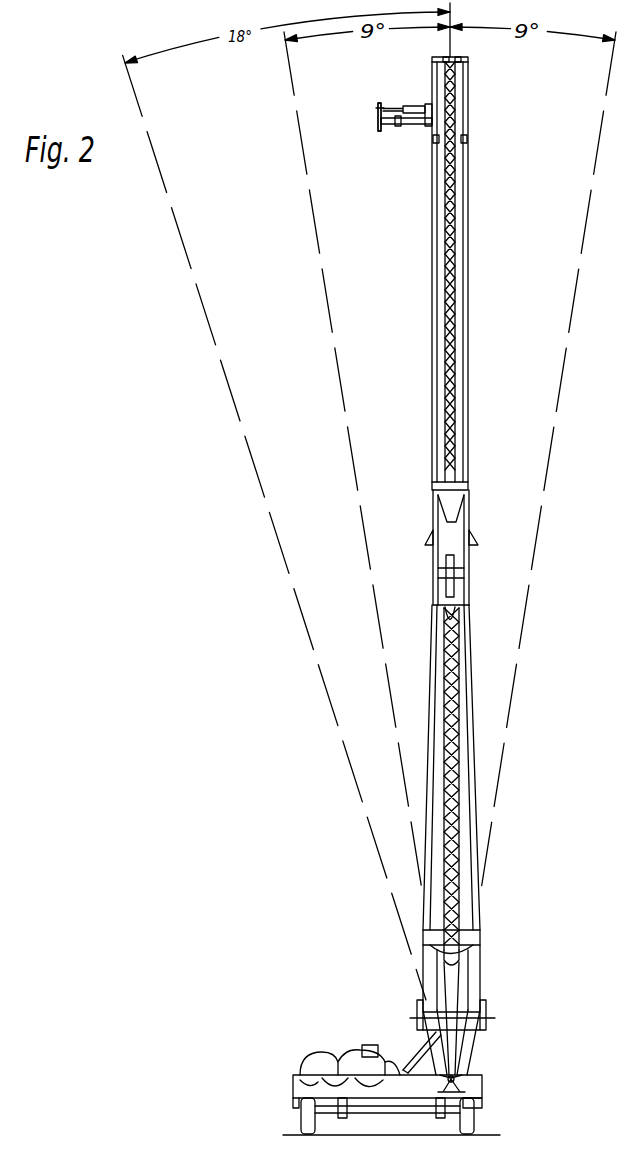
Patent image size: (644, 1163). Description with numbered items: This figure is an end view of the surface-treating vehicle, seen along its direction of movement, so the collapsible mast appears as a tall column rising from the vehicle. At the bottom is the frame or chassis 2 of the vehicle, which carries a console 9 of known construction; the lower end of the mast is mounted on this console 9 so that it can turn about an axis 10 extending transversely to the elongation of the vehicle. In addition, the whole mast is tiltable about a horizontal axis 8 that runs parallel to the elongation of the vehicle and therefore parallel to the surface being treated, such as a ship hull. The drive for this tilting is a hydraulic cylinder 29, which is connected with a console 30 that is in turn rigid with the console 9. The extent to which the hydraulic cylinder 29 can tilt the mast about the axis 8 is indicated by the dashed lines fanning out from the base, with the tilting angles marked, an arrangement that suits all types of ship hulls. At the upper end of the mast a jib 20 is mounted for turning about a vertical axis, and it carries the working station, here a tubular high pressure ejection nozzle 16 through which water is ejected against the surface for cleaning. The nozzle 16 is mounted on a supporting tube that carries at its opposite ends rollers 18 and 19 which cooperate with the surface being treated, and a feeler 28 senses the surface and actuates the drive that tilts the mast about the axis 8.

The frame or chassis 2 is at (483, 1091).
The horizontal axis 8 is at (475, 1072).
The console 9 is at (475, 1050).
The axis 10 is at (487, 1016).
The tubular high pressure ejection nozzle 16 is at (380, 104).
The roller 18 is at (379, 116).
The roller 19 is at (379, 116).
The jib 20 is at (432, 80).
The feeler 28 is at (408, 125).
The hydraulic cylinder 29 is at (380, 1075).
The console 30 is at (403, 1075).